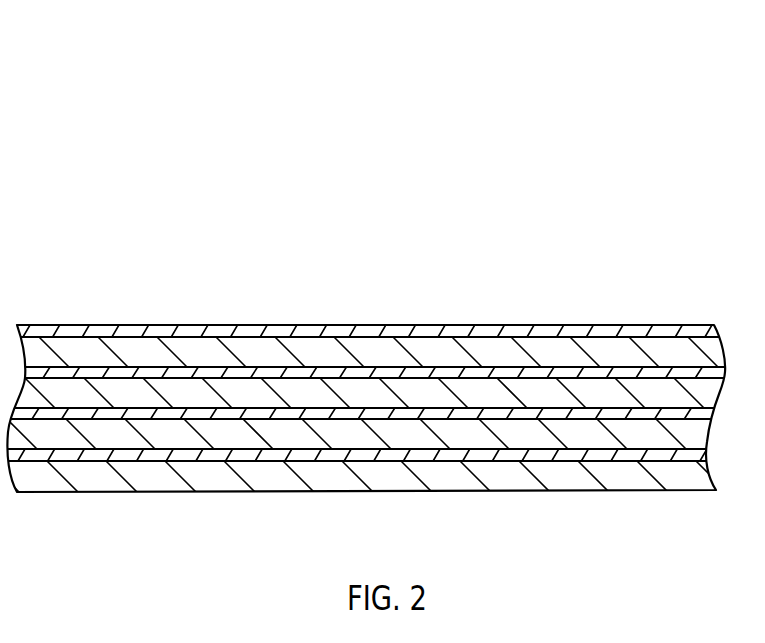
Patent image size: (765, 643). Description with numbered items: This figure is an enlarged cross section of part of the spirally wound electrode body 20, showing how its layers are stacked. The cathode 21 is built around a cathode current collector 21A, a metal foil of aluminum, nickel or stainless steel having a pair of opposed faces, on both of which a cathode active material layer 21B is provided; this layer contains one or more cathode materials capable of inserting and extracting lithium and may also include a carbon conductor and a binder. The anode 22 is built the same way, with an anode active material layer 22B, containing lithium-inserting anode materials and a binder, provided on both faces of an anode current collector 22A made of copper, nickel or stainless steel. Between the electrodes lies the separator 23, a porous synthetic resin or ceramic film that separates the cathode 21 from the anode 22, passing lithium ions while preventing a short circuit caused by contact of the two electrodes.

The spirally wound electrode body 20 is at (648, 126).
The cathode 21 is at (270, 243).
The cathode current collector 21A is at (72, 370).
The cathode active material layer 21B is at (247, 348).
The anode 22 is at (590, 243).
The anode current collector 22A is at (392, 455).
The anode active material layer 22B is at (570, 430).
The separator 23 is at (697, 332).